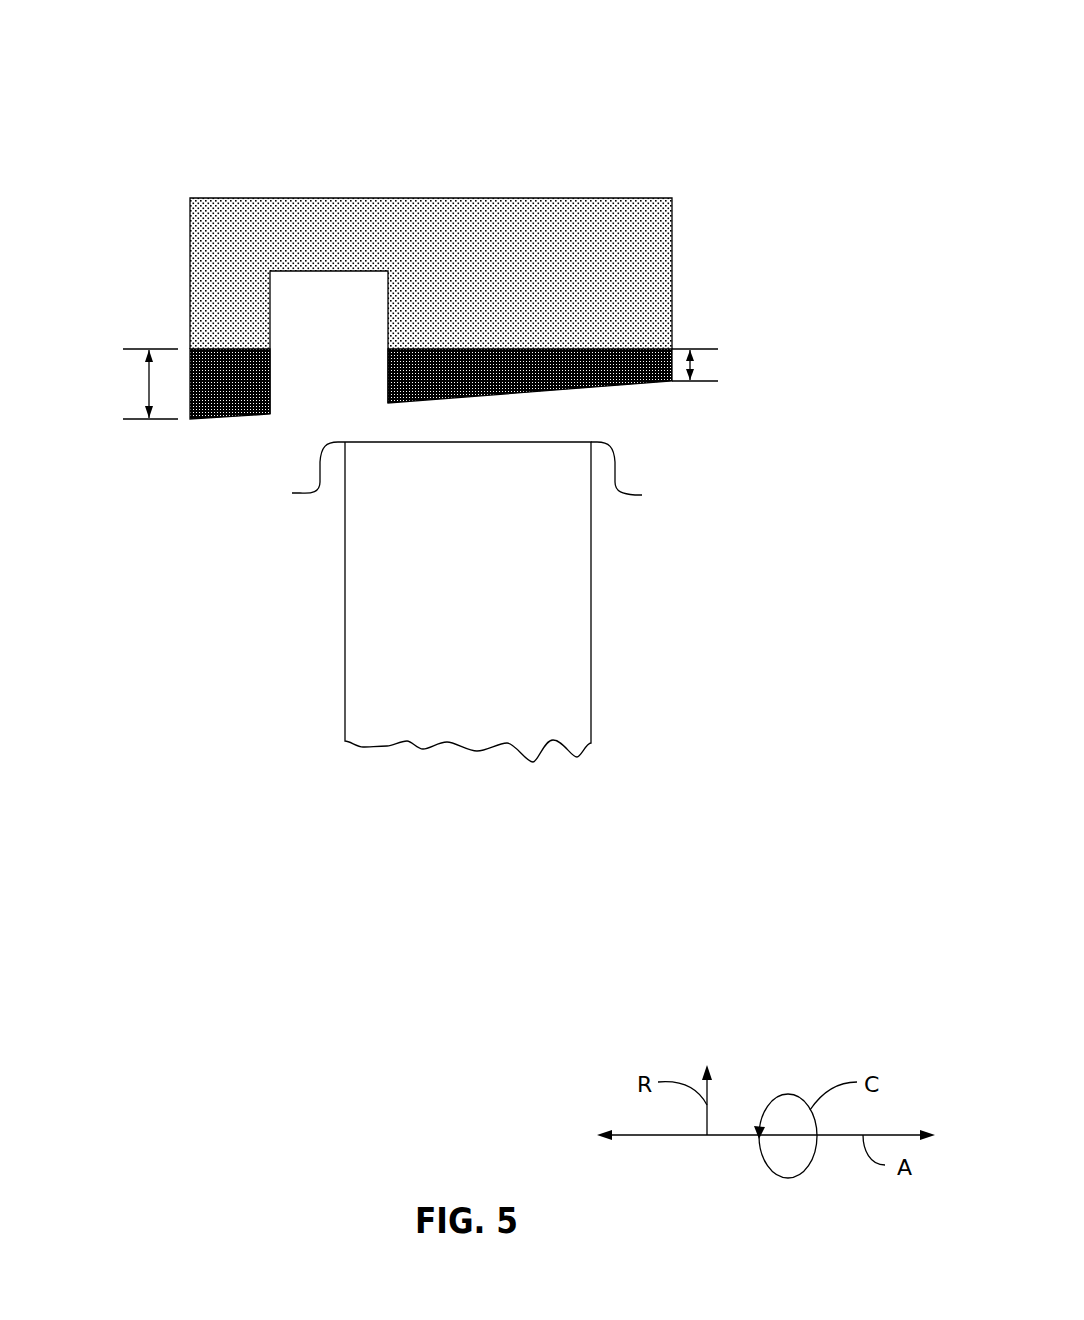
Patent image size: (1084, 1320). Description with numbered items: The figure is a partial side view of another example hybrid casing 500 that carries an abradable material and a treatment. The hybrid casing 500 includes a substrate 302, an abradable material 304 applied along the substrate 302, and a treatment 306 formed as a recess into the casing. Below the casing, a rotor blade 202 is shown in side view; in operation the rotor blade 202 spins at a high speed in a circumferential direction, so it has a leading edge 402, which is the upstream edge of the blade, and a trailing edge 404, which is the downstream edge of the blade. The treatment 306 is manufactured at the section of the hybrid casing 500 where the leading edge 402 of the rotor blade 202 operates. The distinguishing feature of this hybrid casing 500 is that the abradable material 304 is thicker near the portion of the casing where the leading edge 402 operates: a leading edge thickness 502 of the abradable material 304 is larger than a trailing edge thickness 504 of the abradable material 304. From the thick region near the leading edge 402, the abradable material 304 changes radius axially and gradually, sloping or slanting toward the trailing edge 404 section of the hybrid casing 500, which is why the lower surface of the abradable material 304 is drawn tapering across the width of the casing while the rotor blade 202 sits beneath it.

The hybrid casing 500 is at (599, 60).
The substrate 302 is at (618, 198).
The abradable material 304 is at (627, 382).
The treatment 306 is at (306, 416).
The leading edge thickness 502 is at (149, 385).
The trailing edge thickness 504 is at (697, 365).
The rotor blade 202 is at (339, 797).
The leading edge 402 is at (290, 472).
The trailing edge 404 is at (646, 474).